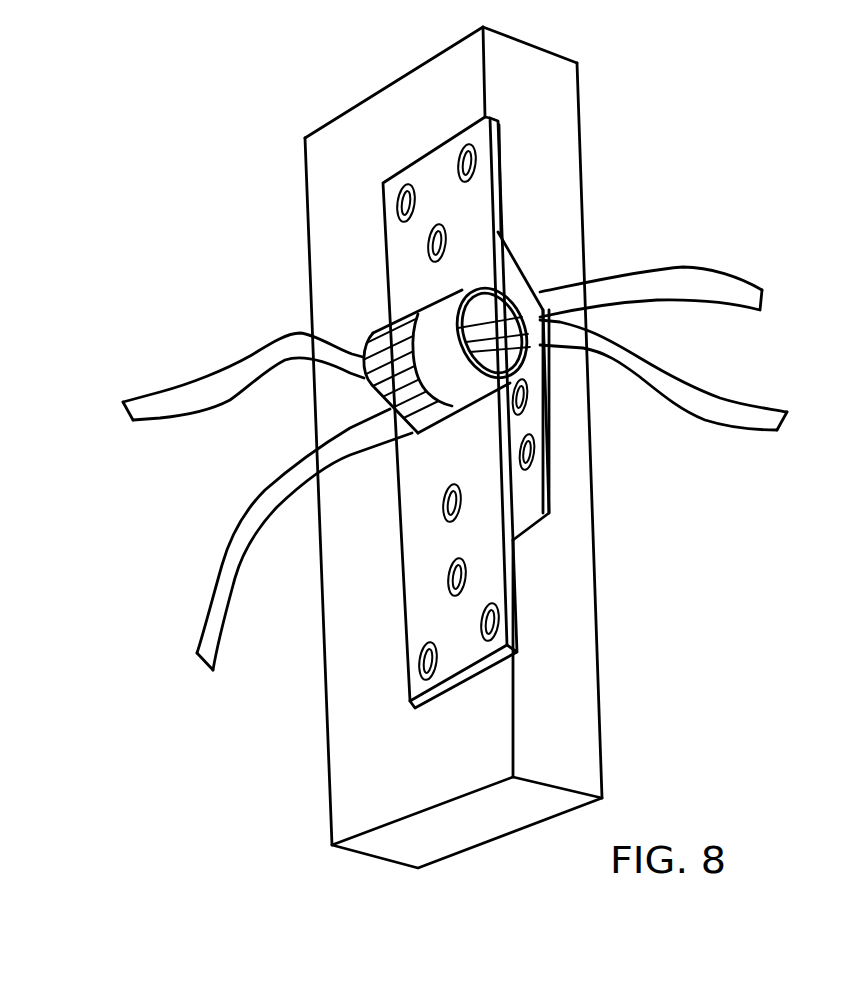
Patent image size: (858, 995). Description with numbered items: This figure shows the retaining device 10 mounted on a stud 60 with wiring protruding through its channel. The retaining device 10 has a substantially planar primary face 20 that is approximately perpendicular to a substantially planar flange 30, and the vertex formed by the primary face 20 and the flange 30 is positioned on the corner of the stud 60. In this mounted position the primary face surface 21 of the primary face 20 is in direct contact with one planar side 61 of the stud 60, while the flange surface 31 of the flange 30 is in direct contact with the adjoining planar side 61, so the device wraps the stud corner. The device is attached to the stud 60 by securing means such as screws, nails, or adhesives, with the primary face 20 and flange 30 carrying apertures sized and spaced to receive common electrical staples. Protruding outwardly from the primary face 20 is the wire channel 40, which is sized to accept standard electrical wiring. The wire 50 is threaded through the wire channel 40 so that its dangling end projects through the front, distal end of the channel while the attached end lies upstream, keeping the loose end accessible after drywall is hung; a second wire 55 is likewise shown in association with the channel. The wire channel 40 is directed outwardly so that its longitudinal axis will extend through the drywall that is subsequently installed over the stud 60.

The retaining device 10 is at (546, 428).
The primary face 20 is at (383, 428).
The primary face surface 21 is at (453, 646).
The flange 30 is at (670, 449).
The flange surface 31 is at (537, 425).
The wire channel 40 is at (494, 305).
The wire 50 is at (240, 528).
The second wire 55 is at (688, 283).
The stud 60 is at (372, 447).
The planar side 61 is at (370, 161).